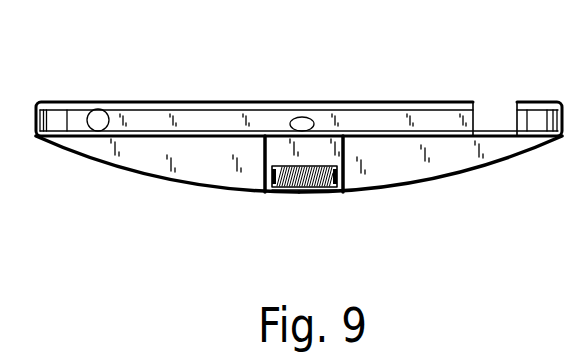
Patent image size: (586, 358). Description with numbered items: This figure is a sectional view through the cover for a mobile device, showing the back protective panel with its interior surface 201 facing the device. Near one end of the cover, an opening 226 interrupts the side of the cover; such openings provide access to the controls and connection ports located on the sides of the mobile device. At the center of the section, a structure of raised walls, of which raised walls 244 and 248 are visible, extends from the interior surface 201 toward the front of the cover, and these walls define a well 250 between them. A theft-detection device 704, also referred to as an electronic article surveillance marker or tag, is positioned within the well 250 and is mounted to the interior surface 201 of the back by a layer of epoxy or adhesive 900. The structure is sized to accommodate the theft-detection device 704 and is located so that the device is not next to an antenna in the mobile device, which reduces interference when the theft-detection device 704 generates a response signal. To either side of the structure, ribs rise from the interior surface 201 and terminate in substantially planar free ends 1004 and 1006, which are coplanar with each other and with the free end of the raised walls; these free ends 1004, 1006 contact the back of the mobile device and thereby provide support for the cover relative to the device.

The interior surface 201 is at (297, 206).
The opening 226 is at (490, 115).
The raised wall 244 is at (265, 150).
The raised wall 248 is at (345, 148).
The well 250 is at (282, 149).
The theft-detection device 704 is at (316, 165).
The layer of epoxy or adhesive 900 is at (322, 190).
The free end 1004 is at (130, 137).
The free end 1006 is at (435, 137).